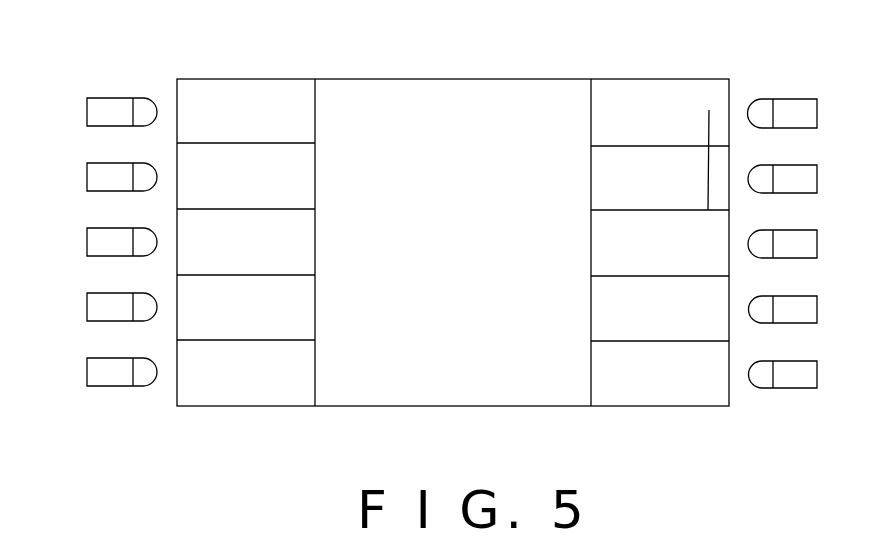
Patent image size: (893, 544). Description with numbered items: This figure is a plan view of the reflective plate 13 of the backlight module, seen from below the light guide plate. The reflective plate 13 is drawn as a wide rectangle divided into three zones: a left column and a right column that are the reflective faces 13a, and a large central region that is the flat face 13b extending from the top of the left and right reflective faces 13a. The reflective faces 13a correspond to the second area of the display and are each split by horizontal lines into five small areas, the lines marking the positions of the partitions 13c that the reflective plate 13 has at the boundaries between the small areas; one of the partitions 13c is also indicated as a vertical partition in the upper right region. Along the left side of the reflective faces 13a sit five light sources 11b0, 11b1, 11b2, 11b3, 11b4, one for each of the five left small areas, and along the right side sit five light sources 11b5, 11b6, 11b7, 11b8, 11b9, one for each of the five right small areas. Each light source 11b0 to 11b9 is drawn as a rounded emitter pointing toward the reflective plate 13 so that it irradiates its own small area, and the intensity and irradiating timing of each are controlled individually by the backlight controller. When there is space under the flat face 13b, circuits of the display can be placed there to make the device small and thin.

The reflective plate 13 is at (460, 212).
The reflective faces 13a is at (637, 188).
The flat face 13b is at (376, 118).
The partitions 13c is at (674, 146).
The light source 11b0 is at (110, 126).
The light source 11b1 is at (110, 191).
The light source 11b2 is at (110, 257).
The light source 11b3 is at (110, 322).
The light source 11b4 is at (110, 387).
The light source 11b5 is at (795, 128).
The light source 11b6 is at (794, 193).
The light source 11b7 is at (794, 259).
The light source 11b8 is at (795, 324).
The light source 11b9 is at (795, 389).